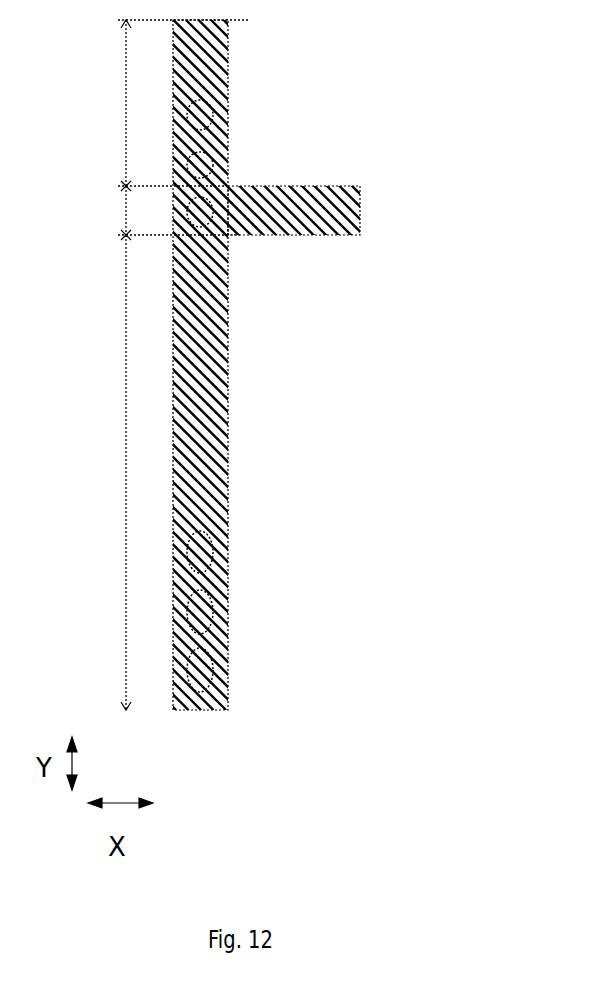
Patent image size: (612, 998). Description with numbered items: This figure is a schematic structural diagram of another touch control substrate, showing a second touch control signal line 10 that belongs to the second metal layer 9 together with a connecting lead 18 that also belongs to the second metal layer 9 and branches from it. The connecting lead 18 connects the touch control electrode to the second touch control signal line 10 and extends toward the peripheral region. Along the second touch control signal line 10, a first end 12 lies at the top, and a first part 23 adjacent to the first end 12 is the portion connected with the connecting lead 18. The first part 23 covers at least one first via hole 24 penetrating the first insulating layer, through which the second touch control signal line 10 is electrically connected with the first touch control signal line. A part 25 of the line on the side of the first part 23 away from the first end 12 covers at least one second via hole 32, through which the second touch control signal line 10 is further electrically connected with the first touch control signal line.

The second metal layer 9 is at (306, 365).
The second touch control signal line 10 is at (228, 90).
The connecting lead 18 is at (325, 205).
The first end 12 is at (109, 105).
The first part 23 is at (107, 213).
The part 25 is at (104, 472).
The first via hole 24 is at (228, 238).
The second via hole 32 is at (217, 555).